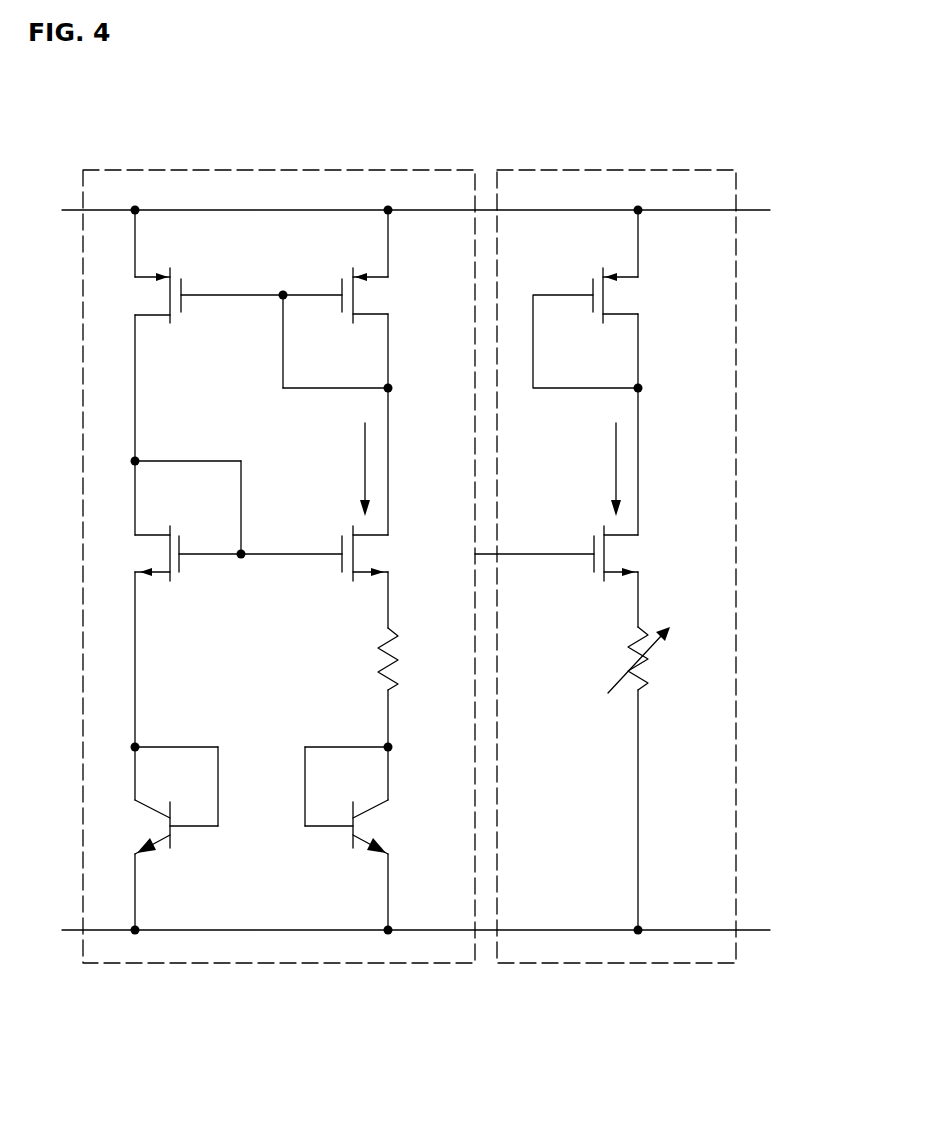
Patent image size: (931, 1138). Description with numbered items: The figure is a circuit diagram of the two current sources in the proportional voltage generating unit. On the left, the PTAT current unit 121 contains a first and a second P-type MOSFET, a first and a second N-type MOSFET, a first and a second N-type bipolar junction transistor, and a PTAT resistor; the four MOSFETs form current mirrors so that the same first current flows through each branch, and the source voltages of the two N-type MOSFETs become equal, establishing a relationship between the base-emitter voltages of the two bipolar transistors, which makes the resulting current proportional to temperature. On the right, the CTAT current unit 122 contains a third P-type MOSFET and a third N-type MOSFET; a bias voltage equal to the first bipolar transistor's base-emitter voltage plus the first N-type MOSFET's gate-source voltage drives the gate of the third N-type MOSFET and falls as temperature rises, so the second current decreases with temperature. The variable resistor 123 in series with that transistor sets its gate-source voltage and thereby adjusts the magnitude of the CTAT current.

The PTAT current unit 121 is at (280, 170).
The CTAT current unit 122 is at (659, 532).
The variable resistor RCTAT 123 is at (726, 623).